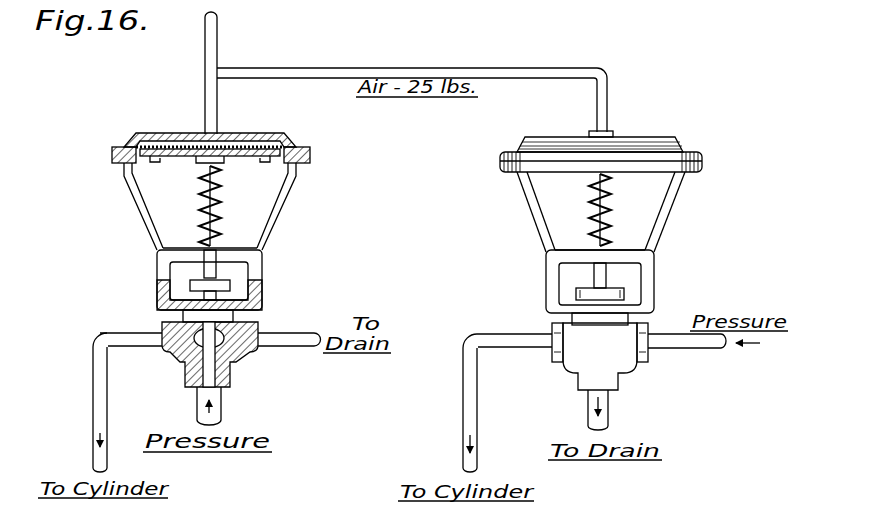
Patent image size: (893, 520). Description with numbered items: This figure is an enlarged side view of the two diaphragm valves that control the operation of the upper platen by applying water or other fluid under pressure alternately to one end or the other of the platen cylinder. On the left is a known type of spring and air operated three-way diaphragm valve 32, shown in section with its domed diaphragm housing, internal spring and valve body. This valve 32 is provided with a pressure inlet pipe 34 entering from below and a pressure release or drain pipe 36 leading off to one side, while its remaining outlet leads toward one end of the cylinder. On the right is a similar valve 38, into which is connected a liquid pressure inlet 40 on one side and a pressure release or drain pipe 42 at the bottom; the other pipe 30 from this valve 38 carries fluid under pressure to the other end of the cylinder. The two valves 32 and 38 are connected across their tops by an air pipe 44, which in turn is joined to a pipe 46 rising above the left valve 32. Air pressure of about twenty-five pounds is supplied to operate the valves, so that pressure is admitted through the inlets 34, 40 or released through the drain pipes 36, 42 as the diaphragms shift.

The pipe 46 is at (217, 45).
The air pipe 44 is at (357, 58).
The three-way diaphragm valve 32 is at (118, 203).
The pressure release or drain pipe 36 is at (288, 332).
The pressure inlet pipe 34 is at (219, 415).
The diaphragm valve 38 is at (521, 208).
The pressure pipe 30 is at (482, 407).
The pressure release or drain pipe 42 is at (609, 415).
The liquid pressure inlet 40 is at (668, 352).